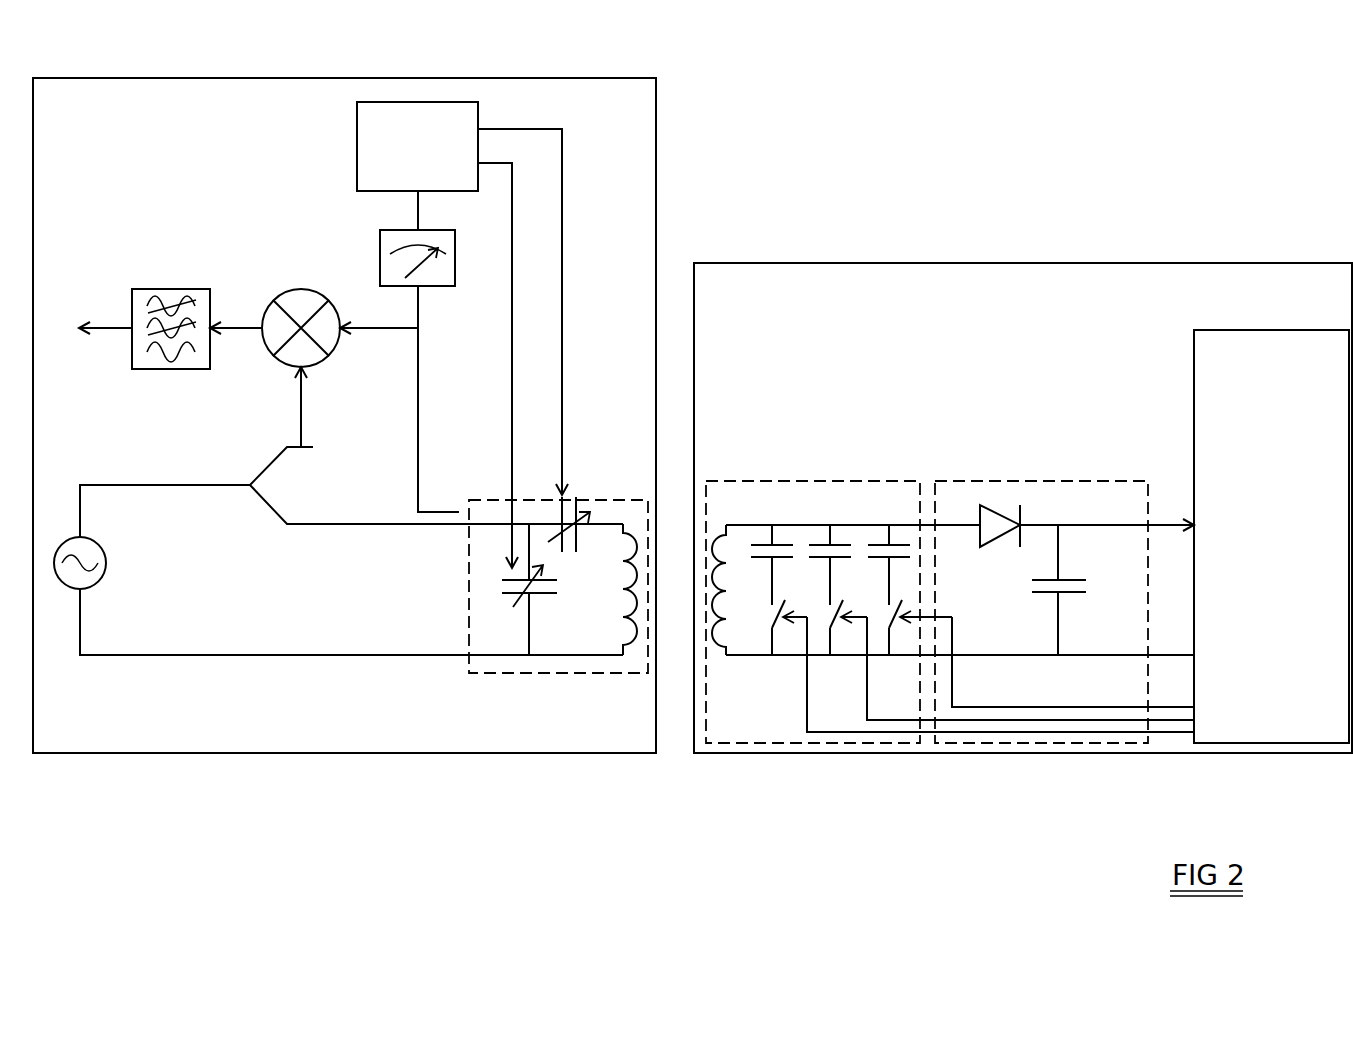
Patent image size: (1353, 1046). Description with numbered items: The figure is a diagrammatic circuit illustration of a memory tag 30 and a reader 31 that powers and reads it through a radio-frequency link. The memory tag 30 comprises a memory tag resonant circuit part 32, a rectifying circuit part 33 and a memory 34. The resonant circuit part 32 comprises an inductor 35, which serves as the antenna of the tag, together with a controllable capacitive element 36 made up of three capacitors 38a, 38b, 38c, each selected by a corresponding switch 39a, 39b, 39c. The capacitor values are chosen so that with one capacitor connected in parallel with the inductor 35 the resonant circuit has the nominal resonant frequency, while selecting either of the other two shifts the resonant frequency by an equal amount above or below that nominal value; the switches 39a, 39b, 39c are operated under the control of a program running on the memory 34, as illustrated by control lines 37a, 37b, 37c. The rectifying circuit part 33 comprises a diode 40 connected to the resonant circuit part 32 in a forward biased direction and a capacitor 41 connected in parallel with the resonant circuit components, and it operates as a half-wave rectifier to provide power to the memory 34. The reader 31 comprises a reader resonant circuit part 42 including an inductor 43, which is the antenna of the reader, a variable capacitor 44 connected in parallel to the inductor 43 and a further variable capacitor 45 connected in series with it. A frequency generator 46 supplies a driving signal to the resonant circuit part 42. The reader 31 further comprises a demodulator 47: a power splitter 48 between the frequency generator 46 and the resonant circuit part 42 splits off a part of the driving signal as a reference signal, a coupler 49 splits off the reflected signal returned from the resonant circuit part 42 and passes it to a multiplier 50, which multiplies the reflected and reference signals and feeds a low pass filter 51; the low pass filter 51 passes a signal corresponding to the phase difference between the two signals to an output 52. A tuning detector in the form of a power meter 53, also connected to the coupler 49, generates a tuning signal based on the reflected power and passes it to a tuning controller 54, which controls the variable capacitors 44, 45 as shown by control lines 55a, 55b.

The memory tag 30 is at (970, 767).
The reader 31 is at (345, 755).
The memory tag resonant circuit part 32 is at (797, 745).
The rectifying circuit part 33 is at (1040, 743).
The memory 34 is at (1265, 745).
The inductor L2 35 is at (722, 545).
The controllable capacitive element 36 is at (896, 565).
The control line 37a is at (1075, 815).
The control line 37b is at (1087, 850).
The control line 37c is at (1148, 850).
The capacitor C1 38a is at (862, 450).
The capacitor C2 38b is at (868, 423).
The capacitor C3 38c is at (822, 398).
The switch S1 39a is at (850, 803).
The switch S2 39b is at (712, 823).
The switch S3 39c is at (672, 778).
The diode D1 40 is at (975, 518).
The capacitor C4 41 is at (1063, 550).
The reader resonant circuit part 42 is at (550, 673).
The inductor L1 43 is at (635, 578).
The variable capacitor VC1 44 is at (530, 630).
The variable capacitor VC2 45 is at (593, 498).
The frequency generator 46 is at (67, 592).
The demodulator 47 is at (249, 240).
The power splitter 48 is at (267, 507).
The coupler 49 is at (447, 518).
The multiplier 50 is at (340, 352).
The low pass filter 51 is at (168, 369).
The output 52 is at (93, 292).
The power meter 53 is at (380, 250).
The tuning controller 54 is at (357, 122).
The control line 55a is at (512, 220).
The control line 55b is at (562, 150).